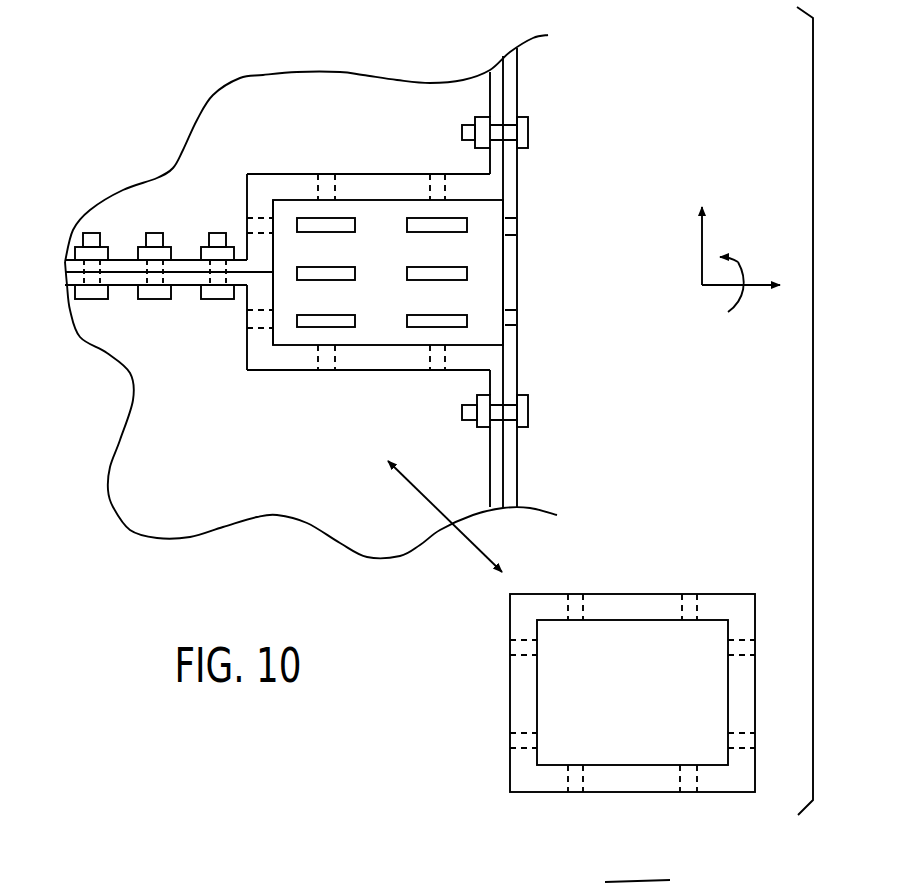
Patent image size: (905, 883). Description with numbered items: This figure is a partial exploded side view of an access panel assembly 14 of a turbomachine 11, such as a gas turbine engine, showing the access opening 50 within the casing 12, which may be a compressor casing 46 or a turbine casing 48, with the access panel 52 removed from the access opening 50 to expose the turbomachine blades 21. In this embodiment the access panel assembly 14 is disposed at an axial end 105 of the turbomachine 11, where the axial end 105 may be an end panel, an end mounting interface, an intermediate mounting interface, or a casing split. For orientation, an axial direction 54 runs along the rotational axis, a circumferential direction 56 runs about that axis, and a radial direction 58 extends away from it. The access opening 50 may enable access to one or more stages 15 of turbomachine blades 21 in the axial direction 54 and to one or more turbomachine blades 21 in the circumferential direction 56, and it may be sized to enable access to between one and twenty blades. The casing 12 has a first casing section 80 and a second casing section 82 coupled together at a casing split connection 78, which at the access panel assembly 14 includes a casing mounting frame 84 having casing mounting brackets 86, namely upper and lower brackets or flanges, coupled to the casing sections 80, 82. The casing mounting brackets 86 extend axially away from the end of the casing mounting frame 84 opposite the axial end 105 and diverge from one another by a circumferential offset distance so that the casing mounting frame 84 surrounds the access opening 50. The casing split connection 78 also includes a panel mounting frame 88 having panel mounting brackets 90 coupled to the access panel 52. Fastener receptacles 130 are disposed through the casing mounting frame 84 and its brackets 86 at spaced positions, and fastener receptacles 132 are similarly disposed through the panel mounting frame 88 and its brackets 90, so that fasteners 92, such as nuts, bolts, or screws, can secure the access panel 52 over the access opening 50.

The turbomachine 11 is at (595, 35).
The casing 12 is at (422, 75).
The access panel assembly 14 is at (595, 467).
The stages 15 is at (320, 155).
The turbomachine blade 21 is at (355, 225).
The compressor casing 46 is at (358, 73).
The turbine casing 48 is at (558, 876).
The access opening 50 is at (480, 275).
The access panel 52 is at (767, 693).
The axial direction 54 is at (718, 285).
The circumferential direction 56 is at (738, 262).
The radial direction 58 is at (700, 248).
The casing split connection 78 is at (65, 262).
The first casing section 80 is at (338, 72).
The second casing section 82 is at (368, 530).
The casing mounting frame 84 is at (265, 366).
The casing mounting brackets 86 is at (365, 172).
The panel mounting frame 88 is at (550, 607).
The panel mounting brackets 90 is at (717, 622).
The fasteners 92 is at (155, 233).
The axial end 105 is at (532, 255).
The fastener receptacles 130 is at (260, 213).
The fastener receptacles 132 is at (682, 607).